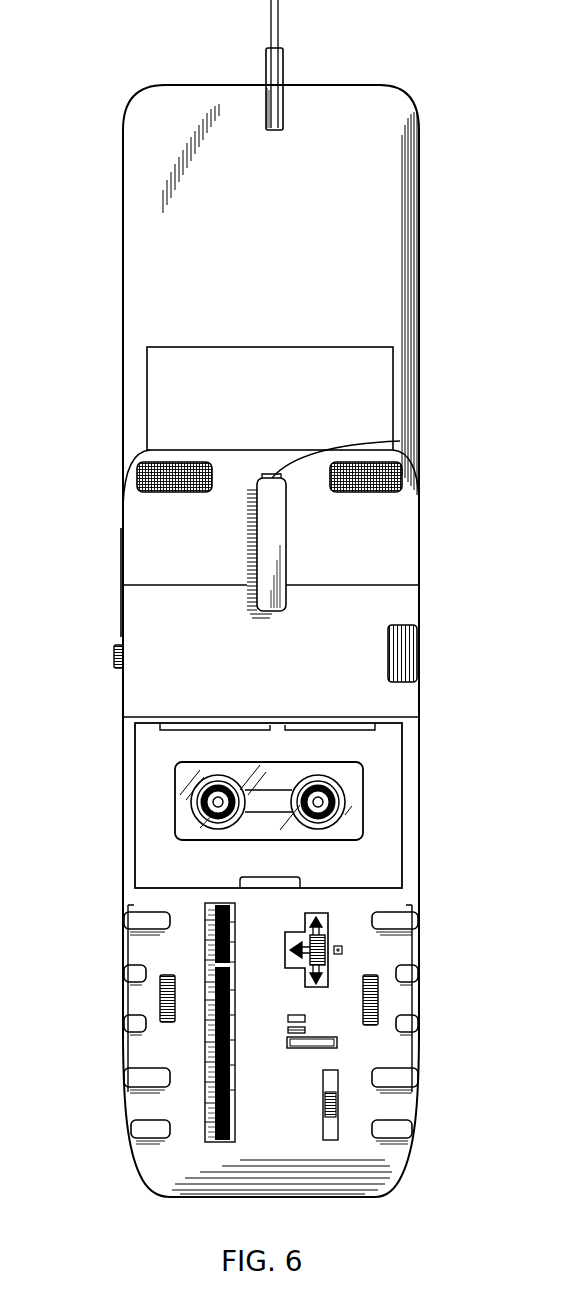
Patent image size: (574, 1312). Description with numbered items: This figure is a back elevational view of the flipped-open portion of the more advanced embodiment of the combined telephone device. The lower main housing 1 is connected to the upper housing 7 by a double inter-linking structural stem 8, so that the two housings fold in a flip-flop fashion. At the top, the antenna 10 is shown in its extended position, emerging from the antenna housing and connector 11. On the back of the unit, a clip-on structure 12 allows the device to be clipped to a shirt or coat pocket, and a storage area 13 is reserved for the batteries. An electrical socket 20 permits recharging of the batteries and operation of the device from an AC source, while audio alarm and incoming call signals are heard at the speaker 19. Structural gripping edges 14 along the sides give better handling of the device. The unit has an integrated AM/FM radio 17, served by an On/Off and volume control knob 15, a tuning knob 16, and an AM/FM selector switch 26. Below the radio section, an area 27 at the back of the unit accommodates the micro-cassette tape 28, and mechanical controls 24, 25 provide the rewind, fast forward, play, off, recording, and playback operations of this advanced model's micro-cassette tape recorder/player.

The lower main housing 1 is at (148, 556).
The upper housing 7 is at (382, 247).
The structural inter-linking stem 8 is at (405, 398).
The antenna 10 is at (271, 40).
The antenna housing and connector 11 is at (285, 105).
The clip-on structure 12 is at (274, 541).
The storage area for batteries 13 is at (383, 617).
The structural gripping edges 14 is at (410, 920).
The On/Off and volume control knob 15 is at (165, 1022).
The tuning knob 16 is at (372, 1035).
The AM/FM radio 17 is at (213, 1145).
The speaker 19 is at (390, 478).
The electrical socket 20 is at (400, 441).
The mechanical control 24 is at (328, 940).
The mechanical control 25 is at (330, 1043).
The AM/FM selector switch 26 is at (338, 1135).
The micro-cassette tape area 27 is at (378, 797).
The micro-cassette tape 28 is at (275, 800).